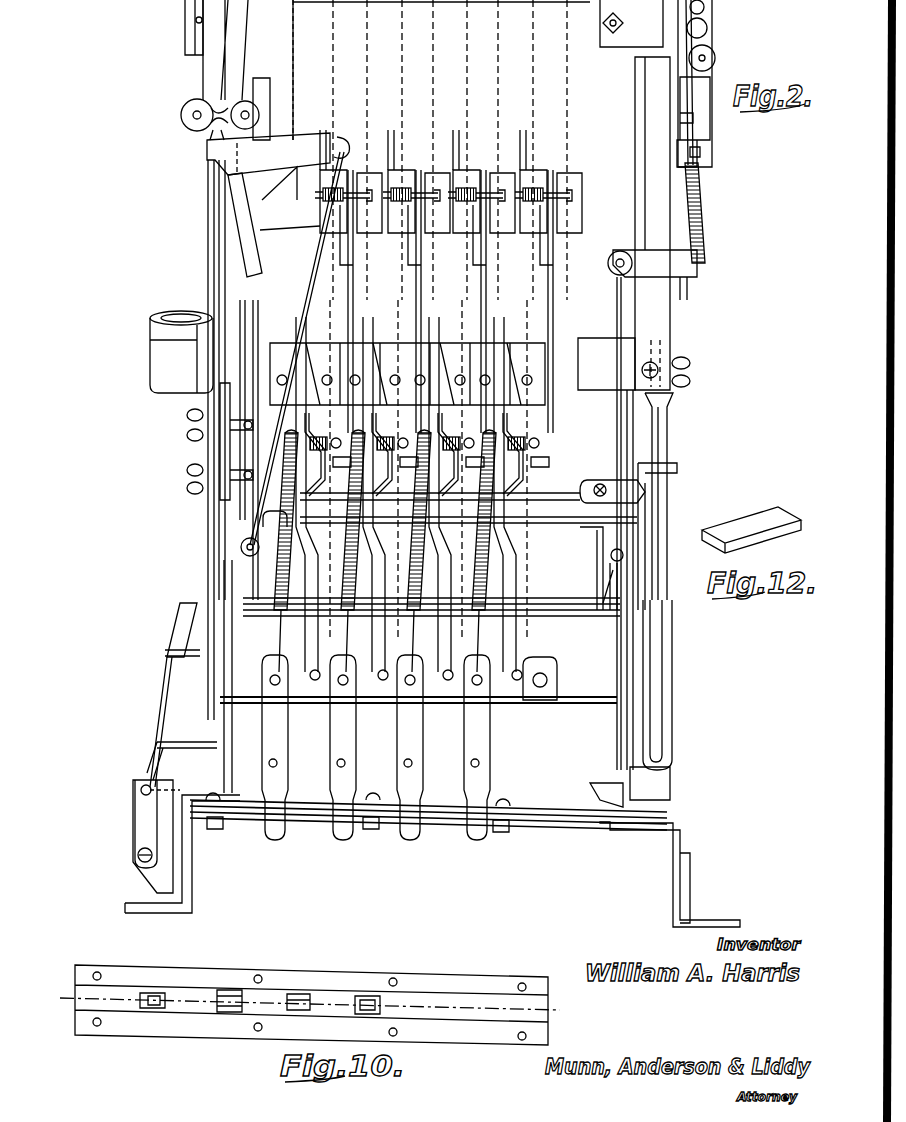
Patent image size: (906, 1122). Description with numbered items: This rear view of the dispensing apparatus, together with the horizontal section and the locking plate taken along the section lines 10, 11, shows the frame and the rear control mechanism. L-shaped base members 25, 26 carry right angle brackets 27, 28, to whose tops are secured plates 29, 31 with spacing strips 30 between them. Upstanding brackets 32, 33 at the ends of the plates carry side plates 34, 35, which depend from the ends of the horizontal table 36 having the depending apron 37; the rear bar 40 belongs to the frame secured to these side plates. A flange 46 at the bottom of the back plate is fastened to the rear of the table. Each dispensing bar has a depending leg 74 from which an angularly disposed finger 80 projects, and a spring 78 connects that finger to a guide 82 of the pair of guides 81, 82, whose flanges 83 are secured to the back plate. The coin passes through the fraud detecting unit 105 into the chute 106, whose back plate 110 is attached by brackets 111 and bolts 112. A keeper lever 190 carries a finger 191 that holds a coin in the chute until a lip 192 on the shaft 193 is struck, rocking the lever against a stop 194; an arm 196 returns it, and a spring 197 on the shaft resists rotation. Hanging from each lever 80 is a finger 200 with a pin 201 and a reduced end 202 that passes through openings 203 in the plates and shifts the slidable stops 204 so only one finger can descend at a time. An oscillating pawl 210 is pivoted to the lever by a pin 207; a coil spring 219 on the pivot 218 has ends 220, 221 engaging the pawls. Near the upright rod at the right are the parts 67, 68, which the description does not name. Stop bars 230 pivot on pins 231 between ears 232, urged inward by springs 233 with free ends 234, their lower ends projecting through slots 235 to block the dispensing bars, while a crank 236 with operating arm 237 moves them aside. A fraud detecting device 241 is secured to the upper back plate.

In FIG. 2, the section line 10 is at (720, 820).
In FIG. 10, the section line 11 is at (75, 1000).
In FIG. 2, the L-shaped base member 25 is at (682, 853).
In FIG. 2, the L-shaped base member 26 is at (165, 884).
In FIG. 2, the right angle bracket 27 is at (690, 870).
In FIG. 2, the right angle bracket 28 is at (195, 890).
In FIG. 2, the plate 29 is at (555, 828).
In FIG. 10, the plate 29 is at (120, 995).
In FIG. 2, the spacing strip 30 is at (560, 820).
In FIG. 10, the spacing strip 30 is at (180, 985).
In FIG. 2, the plate 31 is at (548, 815).
In FIG. 2, the upstanding bracket 32 is at (630, 737).
In FIG. 2, the upstanding bracket 33 is at (233, 752).
In FIG. 2, the side plate 34 is at (618, 718).
In FIG. 2, the side plate 35 is at (245, 712).
In FIG. 2, the table 36 is at (558, 617).
In FIG. 2, the apron 37 is at (578, 662).
In FIG. 2, the rear bar 40 is at (185, 675).
In FIG. 2, the flange 46 is at (550, 606).
In FIG. 2, the block 67 is at (621, 596).
In FIG. 2, the pipe 68 is at (573, 475).
In FIG. 2, the depending leg 74 is at (465, 705).
In FIG. 2, the spring 78 is at (293, 541).
In FIG. 2, the angularly disposed finger 80 is at (290, 703).
In FIG. 2, the guide 81 is at (407, 361).
In FIG. 2, the guide 82 is at (302, 345).
In FIG. 2, the flange 83 is at (300, 352).
In FIG. 2, the fraud detecting unit 105 is at (220, 270).
In FIG. 2, the chute 106 is at (220, 542).
In FIG. 2, the back plate 110 is at (245, 555).
In FIG. 2, the bracket 111 is at (225, 505).
In FIG. 2, the bolt 112 is at (230, 478).
In FIG. 2, the lever 190 is at (225, 680).
In FIG. 2, the finger 191 is at (205, 603).
In FIG. 2, the lip 192 is at (140, 802).
In FIG. 2, the shaft 193 is at (143, 787).
In FIG. 2, the stop 194 is at (172, 640).
In FIG. 2, the arm 196 is at (180, 742).
In FIG. 2, the spring 197 is at (145, 828).
In FIG. 2, the depending finger 200 is at (415, 740).
In FIG. 10, the depending finger 200 is at (300, 995).
In FIG. 2, the pin 201 is at (485, 770).
In FIG. 2, the reduced lower end 202 is at (470, 838).
In FIG. 10, the opening 203 is at (373, 1000).
In FIG. 12, the slidably mounted stop 204 is at (745, 530).
In FIG. 10, the slidably mounted stop 204 is at (328, 1000).
In FIG. 2, the pin 207 is at (468, 727).
In FIG. 2, the oscillating pawl 210 is at (617, 277).
In FIG. 2, the pivot 218 is at (530, 450).
In FIG. 2, the coil spring 219 is at (522, 442).
In FIG. 2, the spring end 220 is at (512, 420).
In FIG. 2, the spring end 221 is at (540, 488).
In FIG. 2, the stop bar 230 is at (480, 284).
In FIG. 2, the pivot pin 231 is at (540, 230).
In FIG. 2, the ear 232 is at (545, 178).
In FIG. 2, the spring 233 is at (535, 228).
In FIG. 2, the spring free end 234 is at (553, 262).
In FIG. 2, the slot 235 is at (530, 600).
In FIG. 2, the crank 236 is at (530, 553).
In FIG. 2, the operating arm 237 is at (627, 517).
In FIG. 2, the fraud detecting device 241 is at (668, 190).